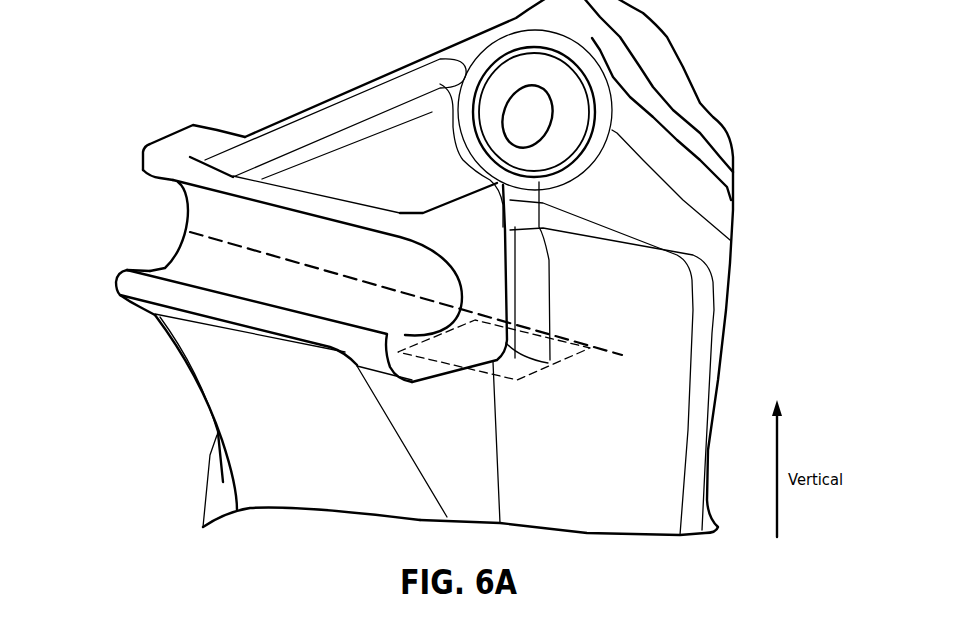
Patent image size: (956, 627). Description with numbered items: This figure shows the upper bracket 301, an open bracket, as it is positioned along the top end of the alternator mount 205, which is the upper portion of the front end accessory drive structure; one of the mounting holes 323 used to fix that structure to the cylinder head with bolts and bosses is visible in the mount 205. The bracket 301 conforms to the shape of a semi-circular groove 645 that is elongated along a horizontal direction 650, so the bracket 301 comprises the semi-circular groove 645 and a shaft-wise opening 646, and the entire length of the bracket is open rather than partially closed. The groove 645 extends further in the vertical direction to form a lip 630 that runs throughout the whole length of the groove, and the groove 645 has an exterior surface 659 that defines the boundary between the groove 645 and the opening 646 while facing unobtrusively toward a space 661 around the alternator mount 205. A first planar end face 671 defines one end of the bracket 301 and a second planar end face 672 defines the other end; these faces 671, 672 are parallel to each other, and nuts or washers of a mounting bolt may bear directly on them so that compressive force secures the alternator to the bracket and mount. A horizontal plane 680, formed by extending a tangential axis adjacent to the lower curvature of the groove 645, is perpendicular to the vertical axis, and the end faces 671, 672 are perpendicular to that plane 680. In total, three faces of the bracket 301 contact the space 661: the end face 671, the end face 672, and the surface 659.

The upper bracket 301 is at (323, 172).
The mounting hole 323 is at (552, 112).
The second planar end face 672 is at (130, 162).
The shaft-wise opening 646 is at (145, 231).
The exterior surface 659 is at (317, 257).
The lip 630 is at (264, 326).
The space around alternator mount 661 is at (271, 421).
The first planar end face 671 is at (481, 282).
The semi-circular groove 645 is at (474, 291).
The horizontal direction 650 is at (429, 303).
The horizontal plane 680 is at (418, 366).
The alternator mount 205 is at (545, 267).